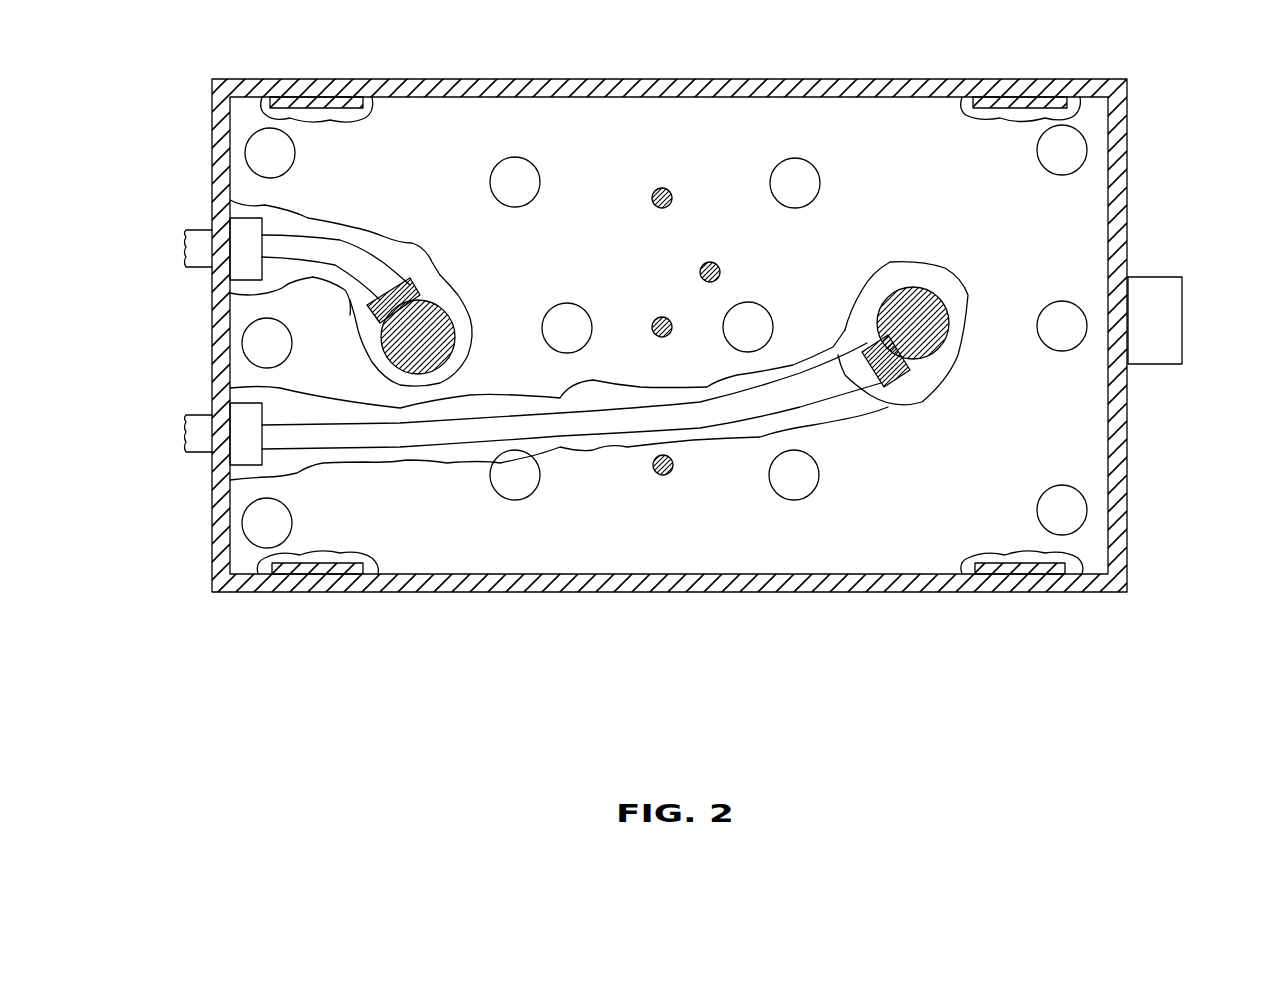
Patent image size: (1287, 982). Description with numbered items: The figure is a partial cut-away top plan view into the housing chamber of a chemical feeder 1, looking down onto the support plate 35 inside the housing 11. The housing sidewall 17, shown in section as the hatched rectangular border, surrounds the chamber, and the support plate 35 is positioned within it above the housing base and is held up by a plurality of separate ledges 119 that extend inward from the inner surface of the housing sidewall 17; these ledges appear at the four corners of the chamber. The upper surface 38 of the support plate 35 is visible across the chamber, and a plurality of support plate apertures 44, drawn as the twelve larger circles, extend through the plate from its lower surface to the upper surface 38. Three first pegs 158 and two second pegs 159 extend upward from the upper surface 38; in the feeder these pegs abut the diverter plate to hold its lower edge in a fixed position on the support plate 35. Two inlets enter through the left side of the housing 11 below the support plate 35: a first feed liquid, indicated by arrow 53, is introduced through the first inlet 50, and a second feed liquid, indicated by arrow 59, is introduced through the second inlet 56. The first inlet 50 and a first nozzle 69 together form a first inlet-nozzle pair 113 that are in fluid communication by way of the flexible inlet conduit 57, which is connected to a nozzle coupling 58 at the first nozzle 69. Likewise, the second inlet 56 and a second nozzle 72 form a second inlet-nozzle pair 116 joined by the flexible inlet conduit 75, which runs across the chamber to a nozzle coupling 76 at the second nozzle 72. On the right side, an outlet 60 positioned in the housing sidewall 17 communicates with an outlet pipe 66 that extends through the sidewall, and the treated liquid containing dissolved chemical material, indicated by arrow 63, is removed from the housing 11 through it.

The chemical feeder 1 is at (330, 618).
The housing 11 is at (893, 626).
The housing sidewall 17 is at (592, 593).
The support plate 35 is at (738, 568).
The upper surface 38 is at (680, 140).
The support plate apertures 44 is at (517, 176).
The first inlet 50 is at (182, 240).
The first feed liquid 53 is at (160, 248).
The second inlet 56 is at (183, 440).
The inlet conduit 57 is at (292, 243).
The nozzle coupling 58 is at (410, 283).
The second feed liquid 59 is at (160, 433).
The outlet 60 is at (1182, 280).
The treated liquid 63 is at (1192, 319).
The outlet pipe 66 is at (1157, 365).
The first nozzle 69 is at (466, 270).
The second nozzle 72 is at (860, 270).
The inlet conduit 75 is at (427, 440).
The nozzle coupling 76 is at (912, 372).
The first inlet-nozzle pair 113 is at (364, 212).
The second inlet-nozzle pair 116 is at (606, 470).
The ledges 119 is at (340, 108).
The first pegs 158 is at (672, 200).
The second pegs 159 is at (718, 268).